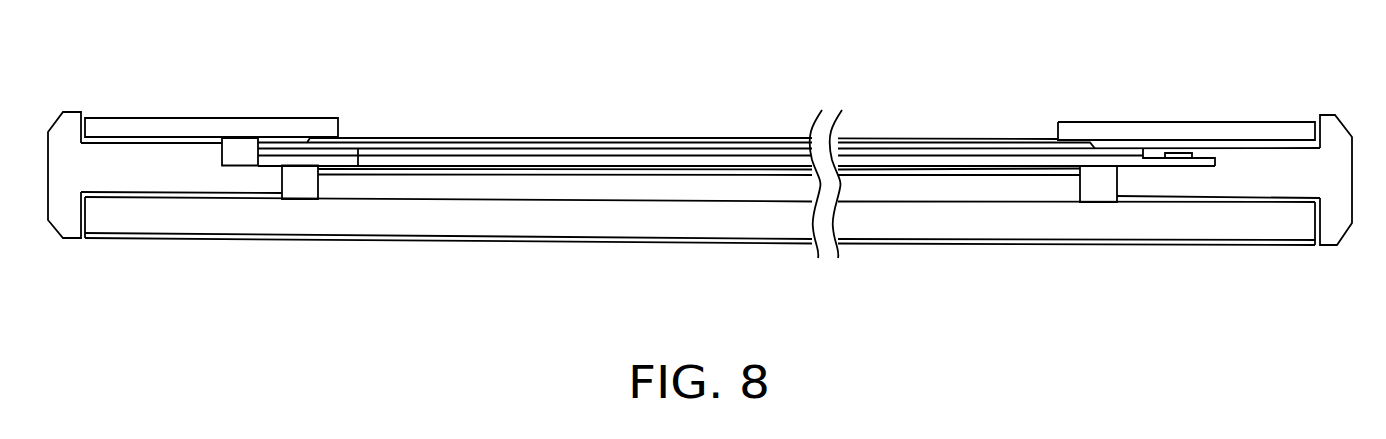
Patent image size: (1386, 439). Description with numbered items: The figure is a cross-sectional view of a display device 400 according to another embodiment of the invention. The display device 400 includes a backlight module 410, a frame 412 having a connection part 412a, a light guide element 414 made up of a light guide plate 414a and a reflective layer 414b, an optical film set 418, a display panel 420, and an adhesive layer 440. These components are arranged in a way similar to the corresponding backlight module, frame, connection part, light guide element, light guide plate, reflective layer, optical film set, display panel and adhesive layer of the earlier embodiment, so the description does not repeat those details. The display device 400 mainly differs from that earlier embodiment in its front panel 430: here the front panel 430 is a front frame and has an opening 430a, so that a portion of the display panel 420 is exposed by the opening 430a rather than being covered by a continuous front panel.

The display device 400 is at (1313, 30).
The backlight module 410 is at (700, 271).
The frame 412 is at (1336, 136).
The connection part 412a is at (1250, 180).
The light guide element 414 is at (700, 271).
The light guide plate 414a is at (437, 222).
The reflective layer 414b is at (500, 240).
The optical film set 418 is at (493, 178).
The display panel 420 is at (975, 153).
The front panel 430 is at (1083, 133).
The opening 430a is at (352, 134).
The adhesive layer 440 is at (202, 194).